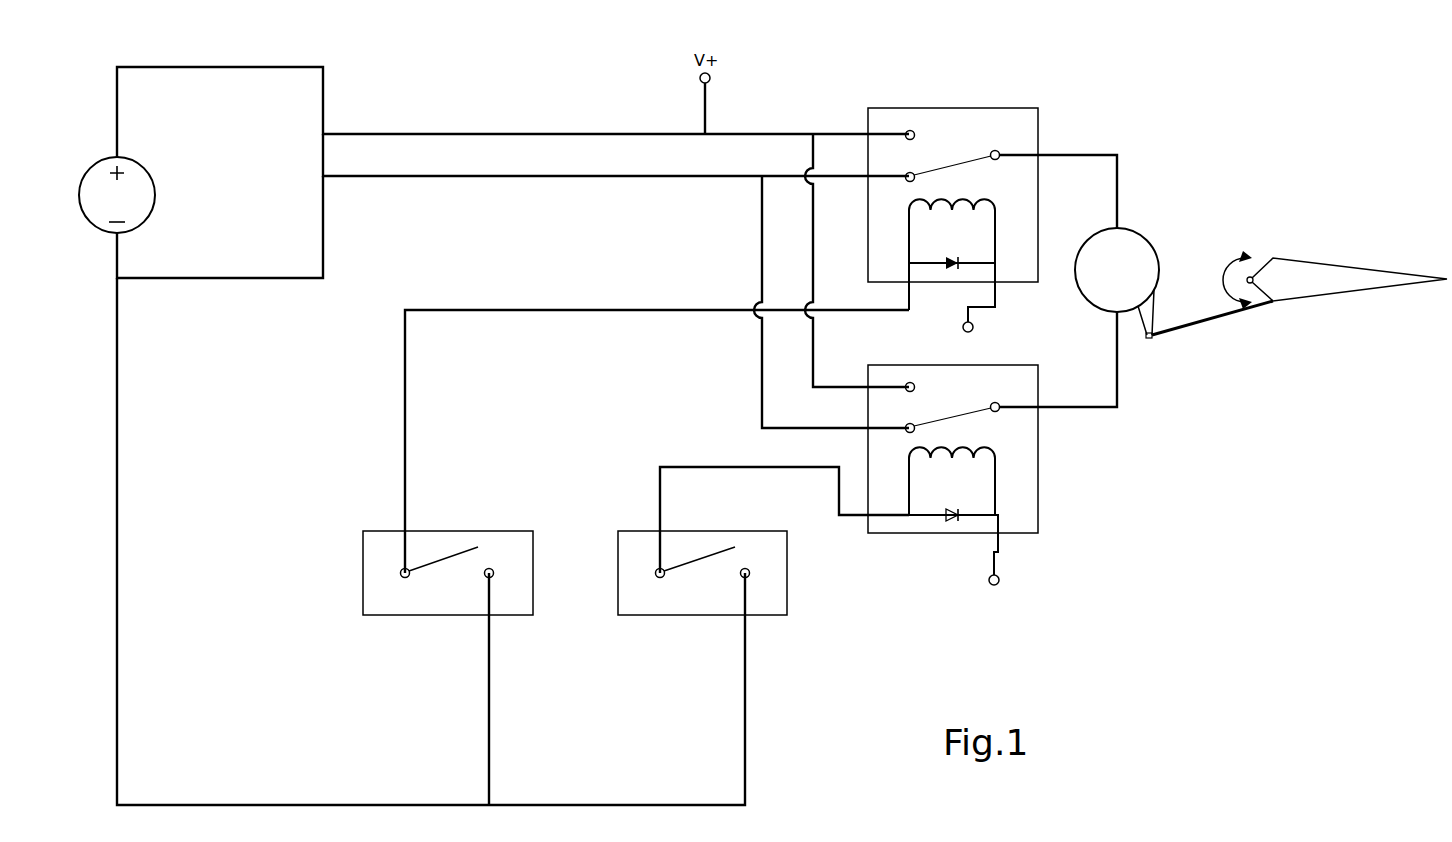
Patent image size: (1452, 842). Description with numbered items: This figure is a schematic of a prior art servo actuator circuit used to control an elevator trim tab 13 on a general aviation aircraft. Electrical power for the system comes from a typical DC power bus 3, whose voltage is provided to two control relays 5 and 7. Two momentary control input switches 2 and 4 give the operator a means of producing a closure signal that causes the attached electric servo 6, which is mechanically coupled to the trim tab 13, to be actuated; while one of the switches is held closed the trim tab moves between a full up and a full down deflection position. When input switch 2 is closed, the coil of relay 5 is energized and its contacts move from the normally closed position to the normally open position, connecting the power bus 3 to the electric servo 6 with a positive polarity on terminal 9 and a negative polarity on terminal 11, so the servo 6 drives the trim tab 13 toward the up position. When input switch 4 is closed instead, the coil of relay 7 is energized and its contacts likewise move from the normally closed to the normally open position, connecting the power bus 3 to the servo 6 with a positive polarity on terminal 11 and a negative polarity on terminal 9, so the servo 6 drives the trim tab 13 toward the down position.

The control input switch 2 is at (361, 528).
The DC power bus 3 is at (150, 159).
The control input switch 4 is at (620, 528).
The control relay 5 is at (960, 104).
The electric servo 6 is at (1156, 241).
The control relay 7 is at (1044, 529).
The terminal 9 is at (1069, 149).
The terminal 11 is at (1068, 398).
The elevator trim tab 13 is at (1272, 244).